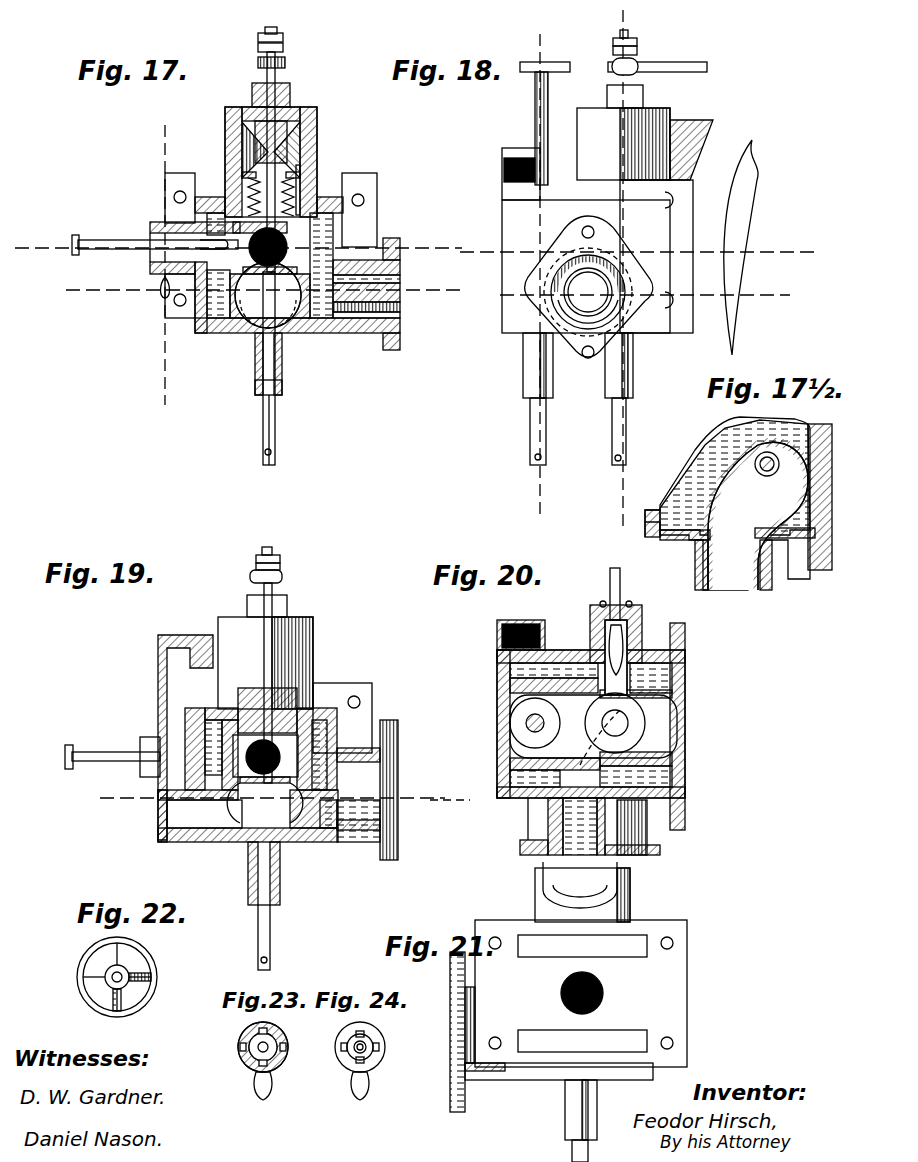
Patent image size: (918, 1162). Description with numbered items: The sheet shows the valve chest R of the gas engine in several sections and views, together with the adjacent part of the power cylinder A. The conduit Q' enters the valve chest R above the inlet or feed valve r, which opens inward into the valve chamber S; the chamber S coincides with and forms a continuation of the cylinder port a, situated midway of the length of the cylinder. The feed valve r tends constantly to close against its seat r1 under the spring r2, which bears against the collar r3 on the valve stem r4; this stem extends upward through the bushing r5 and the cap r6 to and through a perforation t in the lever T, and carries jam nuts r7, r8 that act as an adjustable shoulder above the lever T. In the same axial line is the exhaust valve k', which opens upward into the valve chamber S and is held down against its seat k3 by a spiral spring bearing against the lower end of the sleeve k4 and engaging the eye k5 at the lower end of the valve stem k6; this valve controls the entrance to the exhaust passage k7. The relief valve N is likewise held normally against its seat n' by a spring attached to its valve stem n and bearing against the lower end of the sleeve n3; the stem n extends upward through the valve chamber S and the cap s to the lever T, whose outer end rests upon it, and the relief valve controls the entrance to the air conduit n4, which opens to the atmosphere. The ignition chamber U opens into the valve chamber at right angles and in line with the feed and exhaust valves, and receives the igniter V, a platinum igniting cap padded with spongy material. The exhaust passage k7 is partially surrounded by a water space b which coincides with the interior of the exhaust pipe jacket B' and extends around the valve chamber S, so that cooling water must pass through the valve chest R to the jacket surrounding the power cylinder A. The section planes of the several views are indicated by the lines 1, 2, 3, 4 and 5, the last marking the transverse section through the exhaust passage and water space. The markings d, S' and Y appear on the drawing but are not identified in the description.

In FIG. 17, the jam nut r8 is at (286, 39).
In FIG. 18, the jam nut r8 is at (638, 41).
In FIG. 19, the jam nut r8 is at (280, 555).
In FIG. 24, the jam nut r8 is at (360, 1061).
In FIG. 17, the jam nut r7 is at (287, 48).
In FIG. 18, the jam nut r7 is at (638, 51).
In FIG. 19, the jam nut r7 is at (256, 565).
In FIG. 23, the jam nut r7 is at (263, 1061).
In FIG. 17, the lever T is at (257, 61).
In FIG. 18, the lever T is at (622, 60).
In FIG. 19, the lever T is at (283, 578).
In FIG. 17, the perforation t is at (286, 162).
In FIG. 17, the valve stem r4 is at (291, 88).
In FIG. 17, the cap r6 is at (303, 111).
In FIG. 17, the bushing r5 is at (243, 140).
In FIG. 22, the bushing r5 is at (150, 968).
In FIG. 17, the spring r2 is at (243, 170).
In FIG. 17, the collar r3 is at (300, 160).
In FIG. 17, the feed valve seat r1 is at (320, 182).
In FIG. 17, the feed valve r is at (282, 212).
In FIG. 17, the valve chest R is at (278, 210).
In FIG. 18, the valve chest R is at (597, 256).
In FIG. 19, the valve chest R is at (295, 674).
In FIG. 21, the valve chest R is at (589, 993).
In FIG. 17, the cylinder port a is at (350, 230).
In FIG. 19, the cylinder port a is at (192, 736).
In FIG. 17, the igniter V is at (163, 221).
In FIG. 19, the igniter V is at (112, 757).
In FIG. 17, the valve chamber S is at (266, 248).
In FIG. 19, the valve chamber S is at (265, 759).
In FIG. 21, the valve chamber S is at (588, 993).
In FIG. 17, the ignition chamber U is at (160, 304).
In FIG. 20, the ignition chamber U is at (607, 643).
In FIG. 17, the port d is at (190, 266).
In FIG. 17, the water space b is at (217, 318).
In FIG. 18, the water space b is at (548, 284).
The water space b is at (735, 477).
In FIG. 19, the water space b is at (266, 755).
In FIG. 20, the water space b is at (515, 676).
In FIG. 21, the water space b is at (582, 993).
In FIG. 17, the exhaust valve k' is at (257, 341).
In FIG. 20, the exhaust valve k' is at (612, 729).
In FIG. 17, the exhaust passage k7 is at (290, 340).
In FIG. 18, the exhaust passage k7 is at (589, 287).
The exhaust passage k7 is at (746, 507).
In FIG. 20, the exhaust passage k7 is at (530, 784).
In FIG. 17, the exhaust valve seat k3 is at (348, 330).
In FIG. 17, the sleeve k4 is at (254, 390).
In FIG. 18, the sleeve k4 is at (630, 365).
In FIG. 21, the sleeve k4 is at (591, 1110).
In FIG. 17, the exhaust valve stem k6 is at (258, 368).
In FIG. 18, the exhaust valve stem k6 is at (630, 431).
The exhaust valve stem k6 is at (758, 462).
In FIG. 21, the exhaust valve stem k6 is at (593, 1151).
In FIG. 17, the eye k5 is at (272, 453).
In FIG. 18, the eye k5 is at (617, 460).
In FIG. 17, the exhaust pipe jacket B' is at (376, 294).
The exhaust pipe jacket B' is at (727, 503).
In FIG. 19, the exhaust pipe jacket B' is at (367, 790).
In FIG. 20, the exhaust pipe jacket B' is at (632, 827).
In FIG. 21, the exhaust pipe jacket B' is at (551, 1032).
In FIG. 18, the section line 1 is at (618, 268).
In FIG. 18, the section line 2 is at (538, 274).
In FIG. 17, the section line 3 is at (238, 250).
In FIG. 18, the section line 3 is at (641, 252).
In FIG. 17, the section line 4 is at (161, 263).
In FIG. 17, the section line 5 is at (264, 290).
In FIG. 18, the section line 5 is at (645, 296).
In FIG. 19, the section line 5 is at (272, 801).
In FIG. 20, the section line 5 is at (450, 802).
In FIG. 18, the relief valve stem n is at (538, 268).
In FIG. 19, the relief valve stem n is at (266, 776).
In FIG. 20, the relief valve stem n is at (556, 709).
In FIG. 18, the air conduit n4 is at (509, 174).
In FIG. 19, the air conduit n4 is at (200, 737).
In FIG. 20, the air conduit n4 is at (497, 628).
In FIG. 18, the sleeve n3 is at (528, 365).
In FIG. 19, the sleeve n3 is at (275, 875).
In FIG. 19, the relief valve seat n' is at (341, 846).
In FIG. 19, the relief valve N is at (225, 848).
In FIG. 20, the relief valve N is at (520, 733).
In FIG. 18, the conduit Q' is at (645, 132).
In FIG. 21, the conduit Q' is at (582, 892).
In FIG. 18, the power cylinder A is at (741, 247).
In FIG. 19, the cap s is at (267, 703).
In FIG. 20, the chamber S' is at (593, 726).
In FIG. 20, the guide Y is at (642, 640).